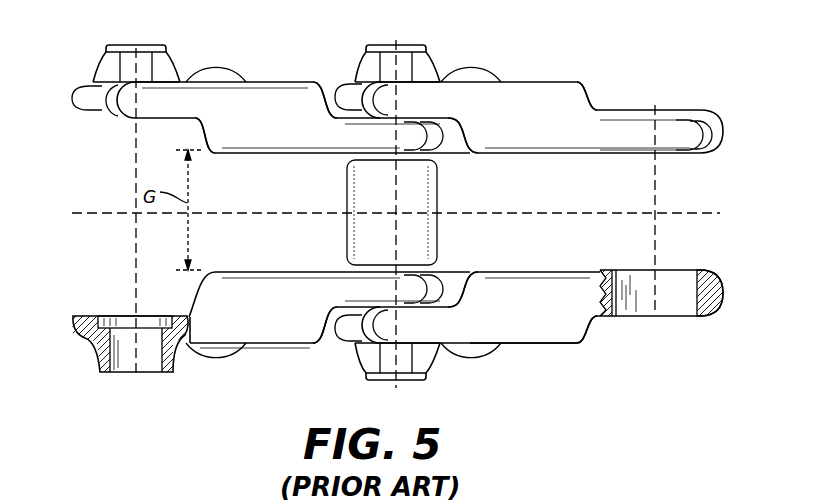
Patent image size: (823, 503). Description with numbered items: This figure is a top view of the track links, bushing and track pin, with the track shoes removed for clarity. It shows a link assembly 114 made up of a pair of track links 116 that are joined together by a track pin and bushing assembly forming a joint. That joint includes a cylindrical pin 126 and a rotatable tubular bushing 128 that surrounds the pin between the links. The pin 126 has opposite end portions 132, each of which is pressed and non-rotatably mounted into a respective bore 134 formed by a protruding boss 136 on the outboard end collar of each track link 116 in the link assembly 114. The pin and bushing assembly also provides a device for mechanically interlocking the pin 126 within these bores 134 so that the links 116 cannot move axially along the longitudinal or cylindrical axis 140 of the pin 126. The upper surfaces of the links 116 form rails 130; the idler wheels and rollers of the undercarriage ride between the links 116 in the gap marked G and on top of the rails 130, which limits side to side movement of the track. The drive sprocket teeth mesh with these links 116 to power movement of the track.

The link assembly 114 is at (684, 108).
The track link 116 is at (278, 155).
The cylindrical pin 126 is at (405, 42).
The rotatable tubular bushing 128 is at (347, 205).
The rail 130 is at (282, 130).
The end portion 132 is at (388, 44).
The bore 134 is at (156, 360).
The protruding boss 136 is at (92, 63).
The longitudinal axis 140 is at (392, 75).